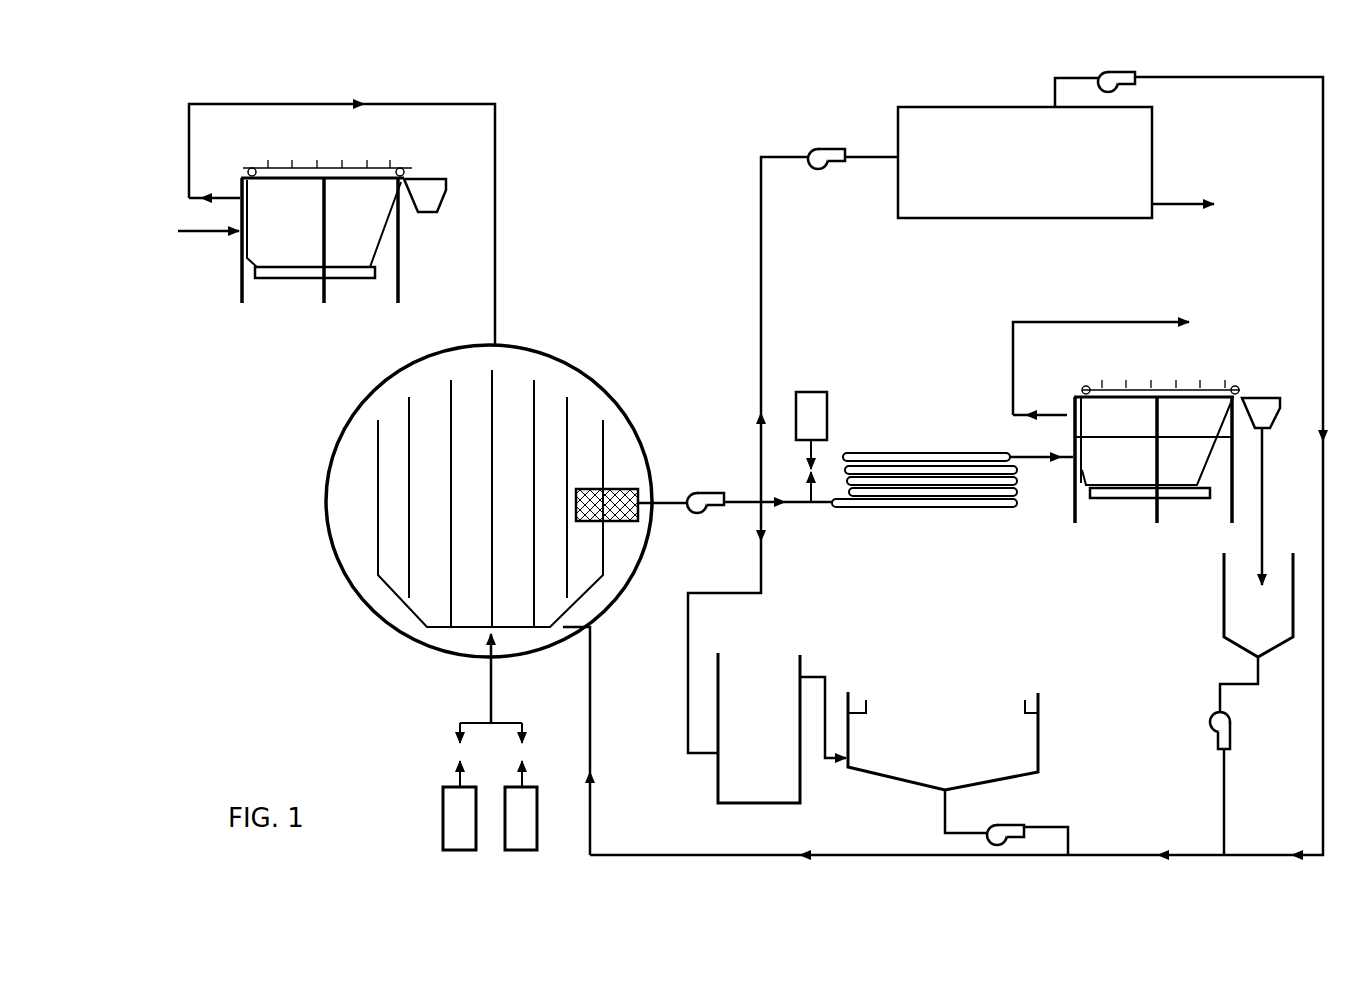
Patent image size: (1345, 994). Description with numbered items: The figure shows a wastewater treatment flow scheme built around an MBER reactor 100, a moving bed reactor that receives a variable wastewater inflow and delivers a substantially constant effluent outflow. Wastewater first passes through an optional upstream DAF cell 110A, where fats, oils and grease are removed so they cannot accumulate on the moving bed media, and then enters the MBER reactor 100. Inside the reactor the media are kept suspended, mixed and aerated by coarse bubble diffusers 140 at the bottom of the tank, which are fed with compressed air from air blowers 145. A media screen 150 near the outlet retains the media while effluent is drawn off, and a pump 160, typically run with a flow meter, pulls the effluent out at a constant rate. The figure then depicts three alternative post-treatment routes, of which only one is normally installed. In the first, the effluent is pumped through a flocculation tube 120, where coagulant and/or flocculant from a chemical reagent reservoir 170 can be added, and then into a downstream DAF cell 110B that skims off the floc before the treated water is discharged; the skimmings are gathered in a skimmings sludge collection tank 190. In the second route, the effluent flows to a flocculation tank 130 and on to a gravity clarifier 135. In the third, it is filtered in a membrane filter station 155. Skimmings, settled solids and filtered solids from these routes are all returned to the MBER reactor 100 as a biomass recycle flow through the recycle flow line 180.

The MBER reactor 100 is at (332, 552).
The upstream DAF cell 110A is at (282, 279).
The downstream DAF cell 110B is at (1160, 383).
The flocculation tube 120 is at (897, 510).
The flocculation tank 130 is at (803, 657).
The gravity clarifier 135 is at (1043, 747).
The coarse bubble diffusers 140 is at (378, 455).
The air blowers 145 is at (440, 808).
The media screen 150 is at (613, 489).
The membrane filter station 155 is at (1010, 223).
The pump 160 is at (694, 492).
The chemical reagent reservoir 170 is at (813, 390).
The recycle flow line 180 is at (592, 742).
The skimmings sludge collection tank 190 is at (1217, 597).